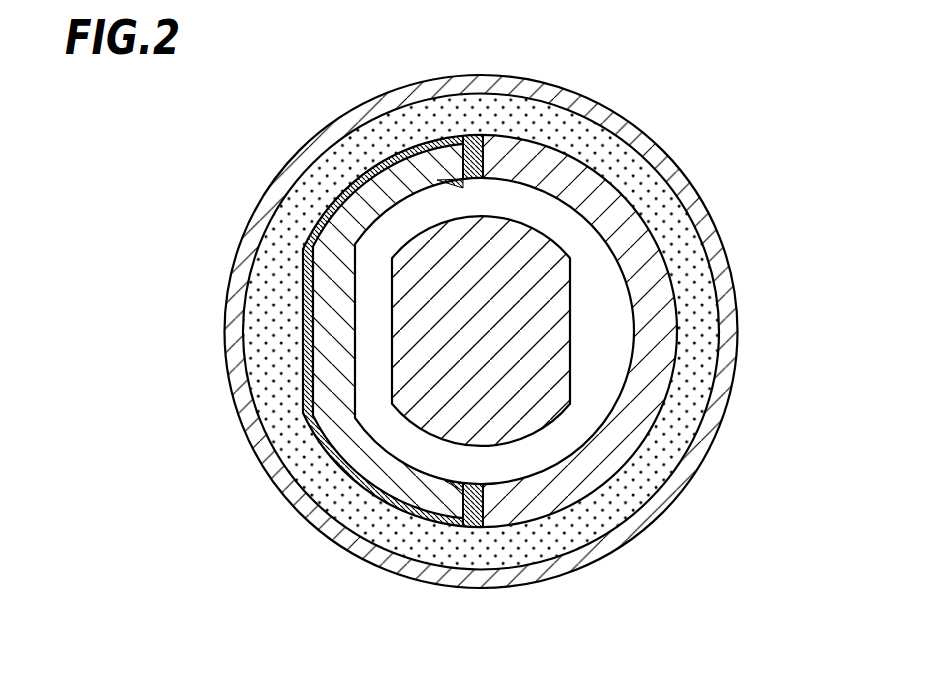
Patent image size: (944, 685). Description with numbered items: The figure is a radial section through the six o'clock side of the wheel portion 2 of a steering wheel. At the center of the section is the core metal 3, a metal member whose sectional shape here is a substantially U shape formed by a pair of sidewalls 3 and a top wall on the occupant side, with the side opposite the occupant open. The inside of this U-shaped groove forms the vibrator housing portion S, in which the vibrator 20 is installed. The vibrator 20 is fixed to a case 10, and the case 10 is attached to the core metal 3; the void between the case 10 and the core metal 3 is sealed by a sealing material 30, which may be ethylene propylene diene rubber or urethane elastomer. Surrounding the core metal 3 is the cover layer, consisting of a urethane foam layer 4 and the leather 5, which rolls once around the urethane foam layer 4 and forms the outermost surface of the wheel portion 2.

The wheel portion 2 is at (647, 112).
The core metal 3 is at (588, 470).
The urethane foam layer 4 is at (670, 452).
The leather 5 is at (737, 305).
The case 10 is at (380, 473).
The vibrator 20 is at (433, 322).
The sealing material 30 is at (484, 530).
The vibrator housing portion S is at (598, 280).